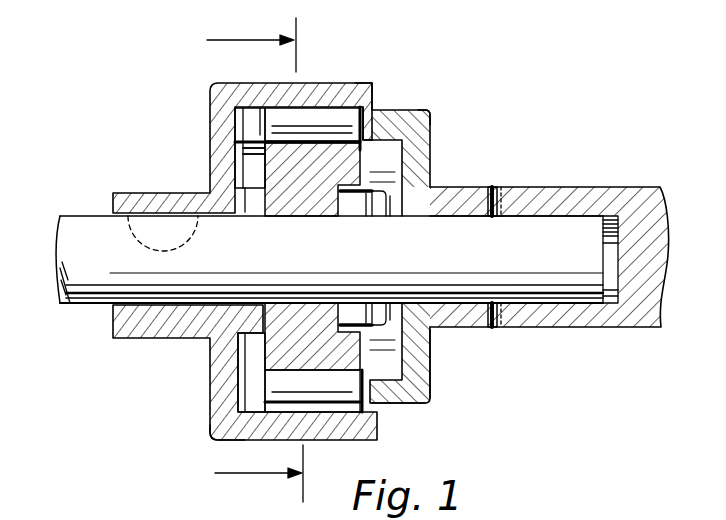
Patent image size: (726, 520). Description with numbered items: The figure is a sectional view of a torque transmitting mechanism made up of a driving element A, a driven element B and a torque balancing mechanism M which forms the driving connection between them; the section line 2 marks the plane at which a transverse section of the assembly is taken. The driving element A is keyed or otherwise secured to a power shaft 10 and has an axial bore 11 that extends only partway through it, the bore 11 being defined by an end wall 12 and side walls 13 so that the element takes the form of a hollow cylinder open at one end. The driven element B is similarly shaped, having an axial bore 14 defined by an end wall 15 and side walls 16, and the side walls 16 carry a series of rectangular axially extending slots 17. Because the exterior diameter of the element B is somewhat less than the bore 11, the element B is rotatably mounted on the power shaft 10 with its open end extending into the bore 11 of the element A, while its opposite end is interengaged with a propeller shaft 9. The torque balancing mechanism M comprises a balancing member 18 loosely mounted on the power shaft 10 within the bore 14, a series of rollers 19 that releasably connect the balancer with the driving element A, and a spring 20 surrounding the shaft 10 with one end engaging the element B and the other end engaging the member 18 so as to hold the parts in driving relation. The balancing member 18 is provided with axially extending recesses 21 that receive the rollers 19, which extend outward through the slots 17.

The section line 2 is at (242, 260).
The propeller shaft 9 is at (641, 210).
The power shaft 10 is at (98, 247).
The axial bore 11 is at (236, 173).
The end wall 12 is at (225, 405).
The side walls 13 is at (378, 85).
The axial bore 14 is at (433, 122).
The end wall 15 is at (413, 362).
The side walls 16 is at (400, 408).
The slots 17 is at (392, 110).
The balancing member 18 is at (283, 355).
The rollers 19 is at (282, 117).
The spring 20 is at (426, 182).
The recesses 21 is at (262, 152).
The driving element A is at (200, 107).
The driven element B is at (438, 153).
The torque balancing mechanism M is at (318, 158).